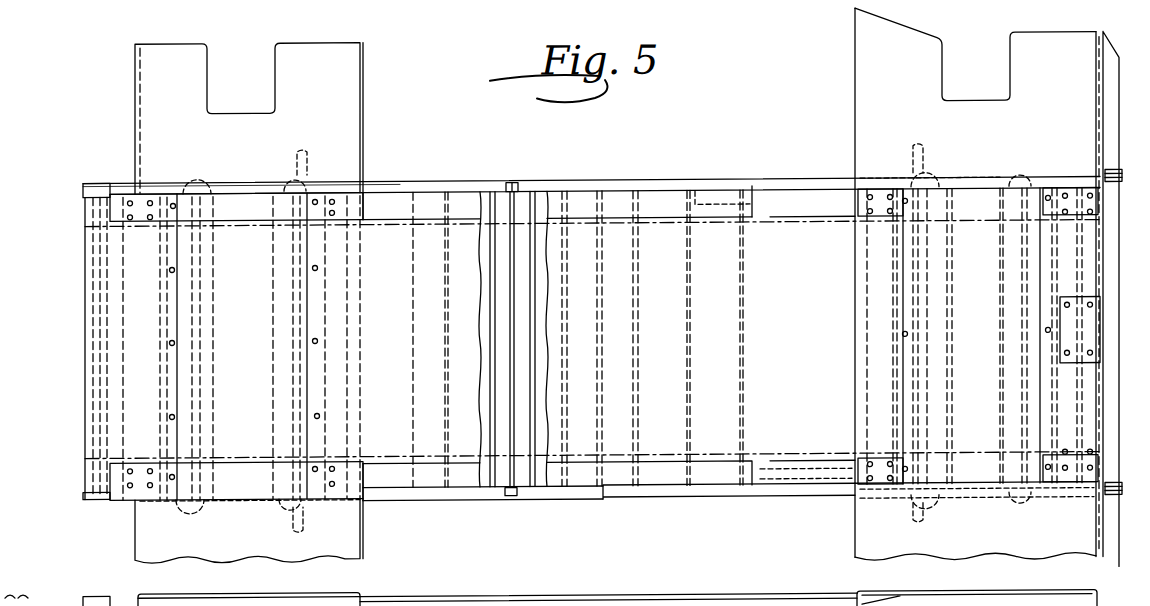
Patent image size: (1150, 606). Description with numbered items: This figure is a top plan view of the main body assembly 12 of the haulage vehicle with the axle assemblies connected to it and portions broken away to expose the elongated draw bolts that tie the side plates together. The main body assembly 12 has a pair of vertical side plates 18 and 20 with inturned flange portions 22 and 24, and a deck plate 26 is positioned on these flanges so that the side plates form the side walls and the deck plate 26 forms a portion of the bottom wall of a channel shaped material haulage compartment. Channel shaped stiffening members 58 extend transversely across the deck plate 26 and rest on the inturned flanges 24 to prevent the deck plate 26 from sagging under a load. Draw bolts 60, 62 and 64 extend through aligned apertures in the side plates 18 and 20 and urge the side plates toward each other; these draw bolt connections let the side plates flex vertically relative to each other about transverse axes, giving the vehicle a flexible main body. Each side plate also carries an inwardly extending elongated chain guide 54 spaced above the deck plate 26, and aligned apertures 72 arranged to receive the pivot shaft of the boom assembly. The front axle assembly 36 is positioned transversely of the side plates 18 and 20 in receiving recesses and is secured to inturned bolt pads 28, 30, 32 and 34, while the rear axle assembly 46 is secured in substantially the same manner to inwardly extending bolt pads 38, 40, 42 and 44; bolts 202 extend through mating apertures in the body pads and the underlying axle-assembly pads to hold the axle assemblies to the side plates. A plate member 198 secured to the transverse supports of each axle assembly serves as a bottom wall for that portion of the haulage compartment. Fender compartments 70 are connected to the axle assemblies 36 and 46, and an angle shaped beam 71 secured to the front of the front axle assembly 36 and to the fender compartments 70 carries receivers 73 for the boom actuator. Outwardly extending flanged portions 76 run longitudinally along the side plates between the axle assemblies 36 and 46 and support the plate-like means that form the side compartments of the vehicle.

The main body assembly 12 is at (597, 163).
The vertical side plate 18 is at (555, 191).
The vertical side plate 20 is at (573, 493).
The inturned flange portion 22 is at (483, 225).
The inturned flange portion 24 is at (485, 453).
The deck plate 26 is at (647, 347).
The inturned bolt pad 28 is at (617, 494).
The inturned bolt pad 30 is at (1103, 203).
The inturned bolt pad 32 is at (882, 456).
The inturned bolt pad 34 is at (1100, 460).
The front axle assembly 36 is at (992, 514).
The inwardly extending bolt pad 38 is at (360, 203).
The inwardly extending bolt pad 40 is at (83, 206).
The inwardly extending bolt pad 42 is at (368, 463).
The inwardly extending bolt pad 44 is at (120, 480).
The rear axle assembly 46 is at (243, 505).
The elongated chain guide 54 is at (673, 207).
The channel shaped stiffening member 58 is at (533, 358).
The draw bolt 60 is at (765, 271).
The draw bolt 62 is at (512, 308).
The draw bolt 64 is at (353, 348).
The fender compartment 70 is at (254, 141).
The angle shaped beam 71 is at (1116, 294).
The aligned aperture 72 is at (752, 181).
The receiver 73 is at (1117, 163).
The outwardly extending flanged portion 76 is at (613, 181).
The plate member 198 is at (260, 324).
The bolt 202 is at (1090, 473).